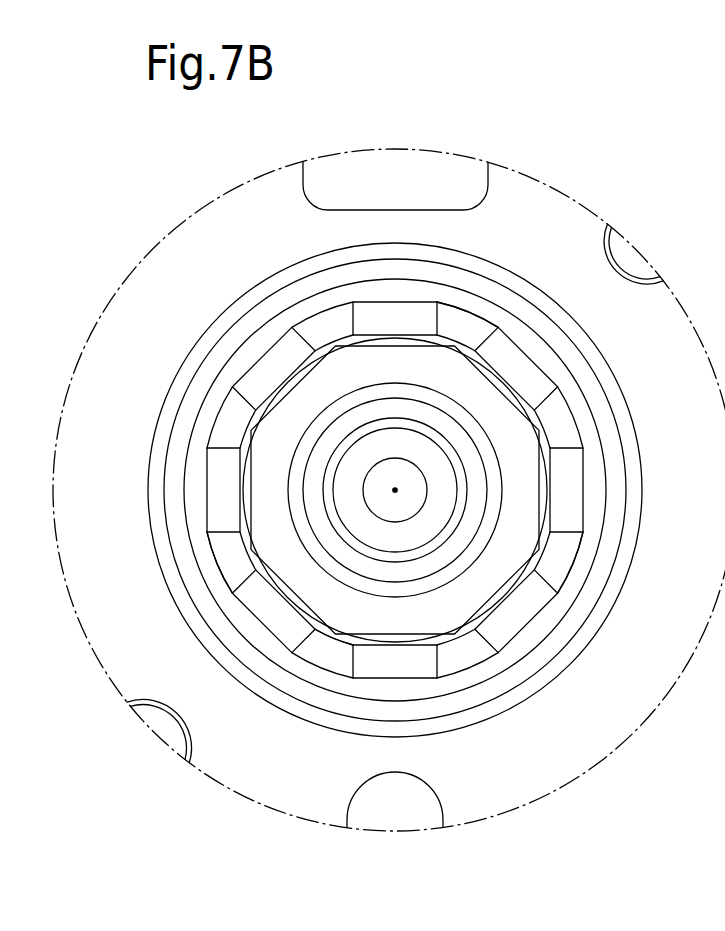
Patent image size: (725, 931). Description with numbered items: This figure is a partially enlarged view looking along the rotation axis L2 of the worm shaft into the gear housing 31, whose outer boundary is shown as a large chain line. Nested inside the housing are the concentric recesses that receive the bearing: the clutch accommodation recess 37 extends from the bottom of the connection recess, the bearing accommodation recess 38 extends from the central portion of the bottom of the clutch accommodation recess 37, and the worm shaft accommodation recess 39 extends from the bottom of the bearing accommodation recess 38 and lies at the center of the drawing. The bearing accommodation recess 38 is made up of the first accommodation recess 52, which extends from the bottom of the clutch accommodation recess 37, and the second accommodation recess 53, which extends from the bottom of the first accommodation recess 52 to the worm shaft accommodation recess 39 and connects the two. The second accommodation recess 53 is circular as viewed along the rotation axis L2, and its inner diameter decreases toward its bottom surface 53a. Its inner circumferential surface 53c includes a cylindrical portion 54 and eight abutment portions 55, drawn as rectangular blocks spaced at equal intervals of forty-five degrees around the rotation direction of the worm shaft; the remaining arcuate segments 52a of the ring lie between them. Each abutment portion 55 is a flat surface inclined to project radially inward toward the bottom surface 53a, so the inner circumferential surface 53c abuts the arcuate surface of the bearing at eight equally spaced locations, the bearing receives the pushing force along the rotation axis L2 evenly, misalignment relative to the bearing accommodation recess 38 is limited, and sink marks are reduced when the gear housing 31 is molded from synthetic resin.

The gear housing 31 is at (522, 800).
The clutch accommodation recess 37 is at (168, 505).
The bearing accommodation recess 38 is at (188, 450).
The worm shaft accommodation recess 39 is at (327, 620).
The first accommodation recess 52 is at (216, 375).
The rotor core segment 52a is at (548, 350).
The second accommodation recess 53 is at (220, 420).
The bottom surface 53a is at (253, 553).
The inner circumferential surface 53c is at (218, 542).
The cylindrical portion 54 is at (568, 558).
The abutment portion 55 is at (572, 510).
The rotation axis L2 is at (395, 490).